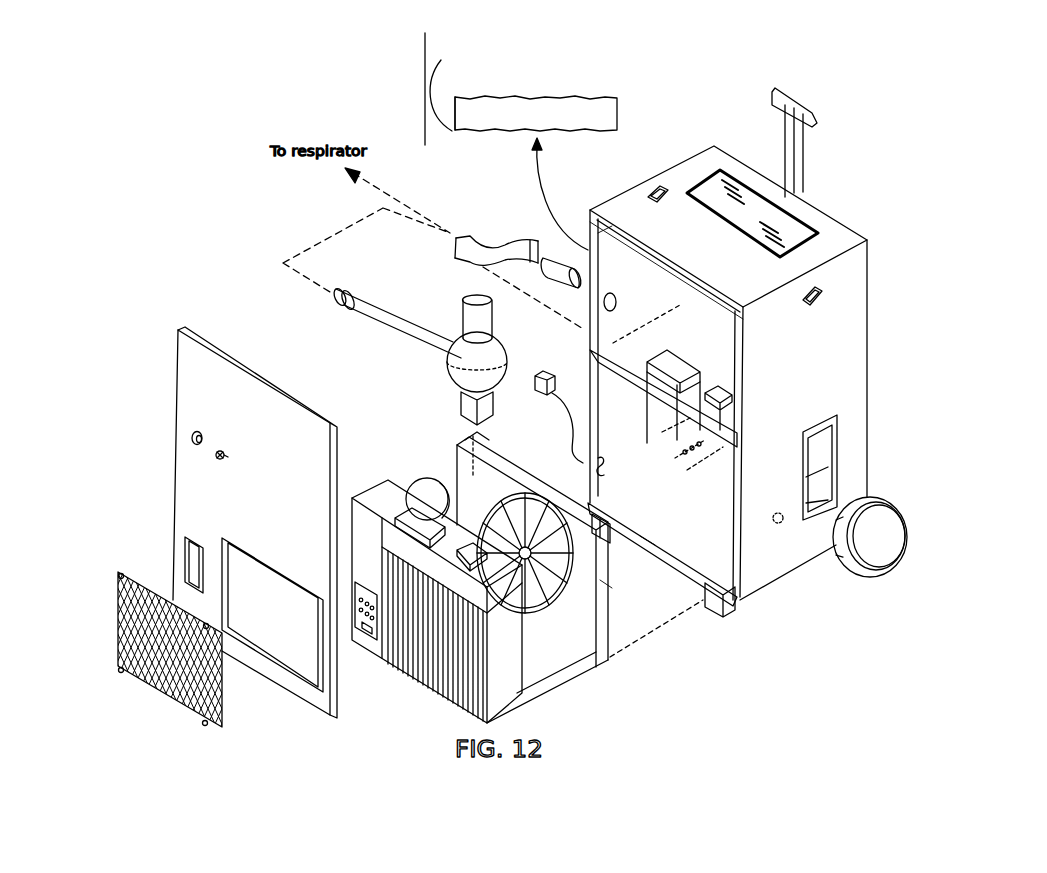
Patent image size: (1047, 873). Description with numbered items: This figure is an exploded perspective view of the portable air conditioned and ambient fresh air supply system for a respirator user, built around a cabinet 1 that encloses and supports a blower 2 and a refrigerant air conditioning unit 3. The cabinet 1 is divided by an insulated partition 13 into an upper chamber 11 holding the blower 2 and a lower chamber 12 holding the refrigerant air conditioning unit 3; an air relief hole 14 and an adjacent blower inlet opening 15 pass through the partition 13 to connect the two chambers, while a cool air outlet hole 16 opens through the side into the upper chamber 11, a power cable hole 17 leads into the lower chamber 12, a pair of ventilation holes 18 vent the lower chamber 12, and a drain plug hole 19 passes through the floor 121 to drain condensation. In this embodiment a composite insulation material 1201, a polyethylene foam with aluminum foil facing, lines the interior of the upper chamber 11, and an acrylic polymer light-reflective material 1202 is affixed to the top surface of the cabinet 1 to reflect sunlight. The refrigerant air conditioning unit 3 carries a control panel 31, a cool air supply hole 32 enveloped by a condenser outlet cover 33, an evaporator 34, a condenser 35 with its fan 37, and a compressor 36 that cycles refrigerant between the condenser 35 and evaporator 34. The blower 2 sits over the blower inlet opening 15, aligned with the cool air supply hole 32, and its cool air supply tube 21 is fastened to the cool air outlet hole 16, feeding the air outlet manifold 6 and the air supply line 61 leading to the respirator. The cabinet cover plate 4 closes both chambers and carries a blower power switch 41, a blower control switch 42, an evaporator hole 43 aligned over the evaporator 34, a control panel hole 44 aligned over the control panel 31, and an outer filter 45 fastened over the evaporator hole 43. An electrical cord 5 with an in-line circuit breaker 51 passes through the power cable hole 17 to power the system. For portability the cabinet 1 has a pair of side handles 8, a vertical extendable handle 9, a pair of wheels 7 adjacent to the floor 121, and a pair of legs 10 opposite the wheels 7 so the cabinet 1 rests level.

The cabinet 1 is at (683, 167).
The blower 2 is at (457, 345).
The refrigerant air conditioning unit 3 is at (567, 680).
The cabinet cover plate 4 is at (247, 374).
The electrical cord 5 is at (572, 432).
The air outlet manifold 6 is at (557, 282).
The wheels 7 is at (850, 572).
The side handles 8 is at (667, 203).
The extendable handle 9 is at (803, 168).
The legs 10 is at (624, 513).
The upper chamber 11 is at (600, 234).
The lower chamber 12 is at (697, 520).
The partition 13 is at (620, 375).
The air relief hole 14 is at (670, 365).
The blower inlet opening 15 is at (722, 392).
The cool air outlet hole 16 is at (614, 300).
The power cable hole 17 is at (600, 463).
The ventilation holes 18 is at (665, 455).
The drain plug hole 19 is at (775, 512).
The cool air supply tube 21 is at (394, 325).
The control panel 31 is at (366, 630).
The cool air supply hole 32 is at (406, 519).
The condenser outlet cover 33 is at (500, 595).
The evaporator 34 is at (490, 695).
The condenser 35 is at (613, 592).
The compressor 36 is at (425, 495).
The fan 37 is at (527, 608).
The blower power switch 41 is at (228, 456).
The blower control switch 42 is at (202, 436).
The evaporator hole 43 is at (282, 573).
The control panel hole 44 is at (199, 538).
The outer filter 45 is at (140, 575).
The circuit breaker 51 is at (553, 374).
The air supply line 61 is at (478, 247).
The floor 121 is at (645, 548).
The composite insulation material 1201 is at (627, 112).
The acrylic polymer light-reflective material 1202 is at (810, 224).